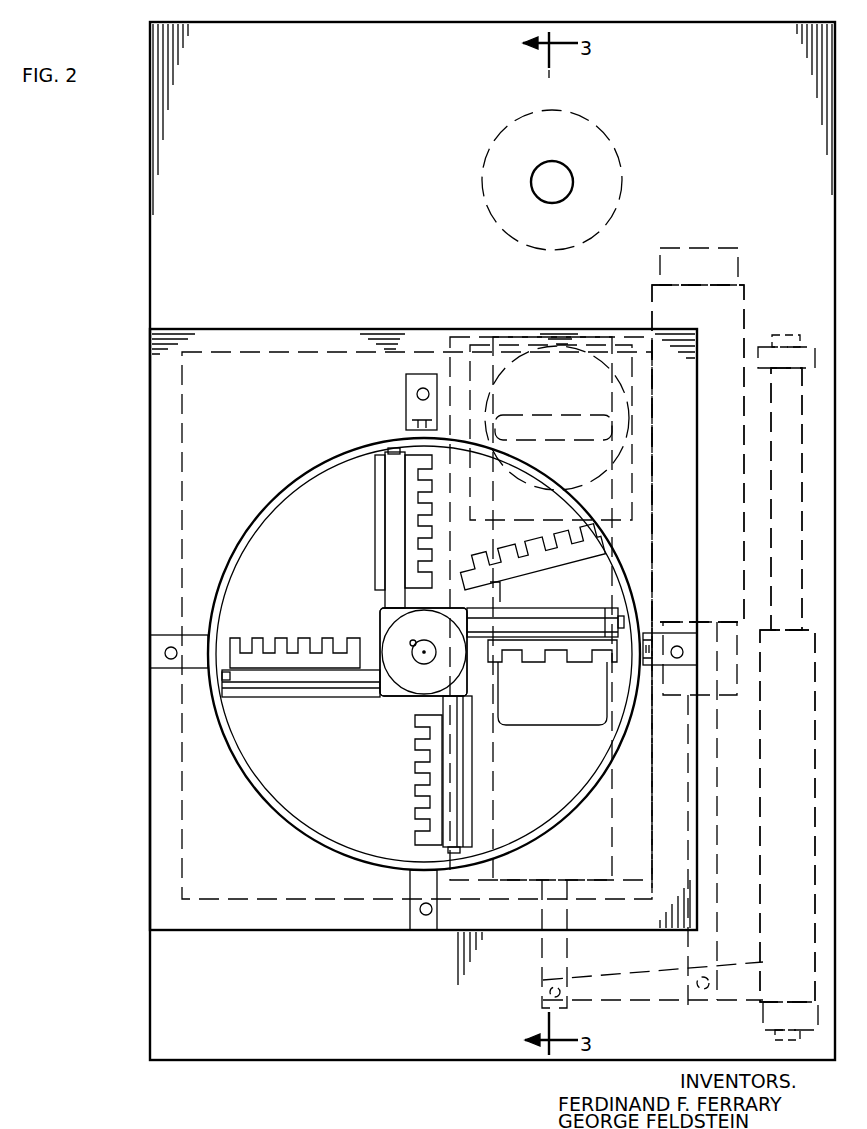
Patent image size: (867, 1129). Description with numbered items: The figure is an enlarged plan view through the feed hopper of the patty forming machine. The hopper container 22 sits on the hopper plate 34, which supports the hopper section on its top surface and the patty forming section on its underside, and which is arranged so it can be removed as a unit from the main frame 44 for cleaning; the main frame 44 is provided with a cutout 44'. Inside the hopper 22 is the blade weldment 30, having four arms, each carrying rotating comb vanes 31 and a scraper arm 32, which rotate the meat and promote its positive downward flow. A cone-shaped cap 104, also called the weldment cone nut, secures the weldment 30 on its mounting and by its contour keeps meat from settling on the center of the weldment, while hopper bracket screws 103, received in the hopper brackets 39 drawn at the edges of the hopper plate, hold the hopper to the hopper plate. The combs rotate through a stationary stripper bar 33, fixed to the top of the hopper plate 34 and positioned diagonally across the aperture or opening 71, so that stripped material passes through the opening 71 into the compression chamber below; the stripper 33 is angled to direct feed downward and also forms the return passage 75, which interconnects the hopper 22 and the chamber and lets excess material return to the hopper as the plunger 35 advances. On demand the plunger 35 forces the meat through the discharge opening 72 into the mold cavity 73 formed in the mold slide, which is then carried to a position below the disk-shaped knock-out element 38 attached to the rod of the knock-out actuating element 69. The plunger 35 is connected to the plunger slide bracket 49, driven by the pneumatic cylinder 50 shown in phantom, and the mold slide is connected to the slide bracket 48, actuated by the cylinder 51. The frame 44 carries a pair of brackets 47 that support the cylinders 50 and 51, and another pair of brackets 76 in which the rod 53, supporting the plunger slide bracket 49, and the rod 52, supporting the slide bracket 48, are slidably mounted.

The hopper container 22 is at (258, 520).
The blade weldment 30 is at (345, 614).
The rotating comb vanes 31 is at (428, 572).
The scraper arm 32 is at (395, 452).
The stationary stripper bar 33 is at (540, 574).
The hopper plate 34 is at (298, 329).
The plunger 35 is at (527, 880).
The knock-out element 38 is at (618, 165).
The mounting bracket 39 is at (406, 385).
The main frame 44 is at (492, 570).
The cutout 44' is at (417, 601).
The brackets 47 is at (722, 249).
The slide bracket 48 is at (770, 744).
The plunger slide bracket 49 is at (628, 988).
The pneumatic cylinder 50 is at (744, 300).
The cylinder 51 is at (698, 453).
The rod 52 is at (795, 537).
The rod 53 is at (786, 499).
The actuating element 69 is at (552, 168).
The opening 71 is at (540, 727).
The discharge opening 72 is at (557, 438).
The mold cavity 73 is at (510, 352).
The return passage 75 is at (492, 582).
The brackets 76 is at (806, 352).
The hopper bracket screws 103 is at (425, 388).
The cone-shaped cap 104 is at (416, 680).